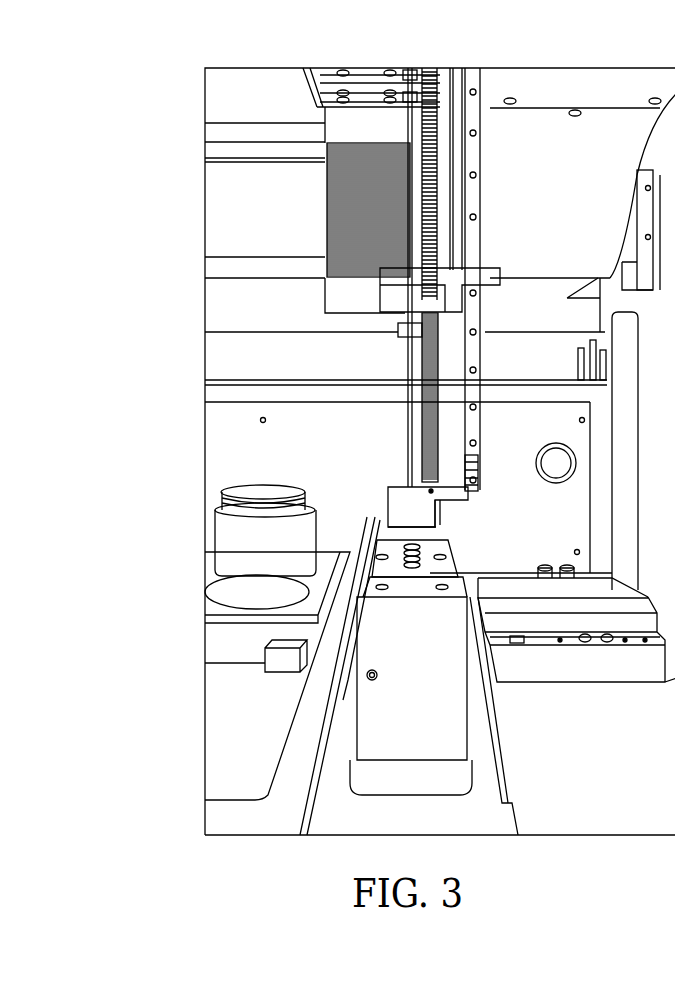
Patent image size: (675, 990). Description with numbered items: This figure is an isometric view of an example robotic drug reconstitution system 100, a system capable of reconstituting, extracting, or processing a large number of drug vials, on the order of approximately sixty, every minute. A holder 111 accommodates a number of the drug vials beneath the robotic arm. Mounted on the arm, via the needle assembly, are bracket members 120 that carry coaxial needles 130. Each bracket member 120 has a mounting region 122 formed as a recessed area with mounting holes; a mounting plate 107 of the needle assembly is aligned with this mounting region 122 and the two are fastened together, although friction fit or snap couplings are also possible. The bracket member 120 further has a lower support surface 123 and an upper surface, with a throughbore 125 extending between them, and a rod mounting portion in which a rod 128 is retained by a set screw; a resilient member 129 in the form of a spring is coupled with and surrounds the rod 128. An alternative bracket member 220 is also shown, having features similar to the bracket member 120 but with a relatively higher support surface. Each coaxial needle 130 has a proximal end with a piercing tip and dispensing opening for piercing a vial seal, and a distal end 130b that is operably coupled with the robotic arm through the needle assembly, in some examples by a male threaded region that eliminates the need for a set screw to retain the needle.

The drug reconstitution system 100 is at (150, 203).
The mounting plate 107 is at (483, 168).
The holder 111 is at (435, 722).
The bracket member 120 is at (440, 505).
The mounting region 122 is at (476, 460).
The support surface 123 is at (437, 515).
The throughbore 125 is at (387, 491).
The rod 128 is at (410, 137).
The resilient member 129 is at (422, 212).
The coaxial needle 130 is at (407, 247).
The distal end 130b is at (396, 323).
The alternative bracket member 220 is at (445, 268).